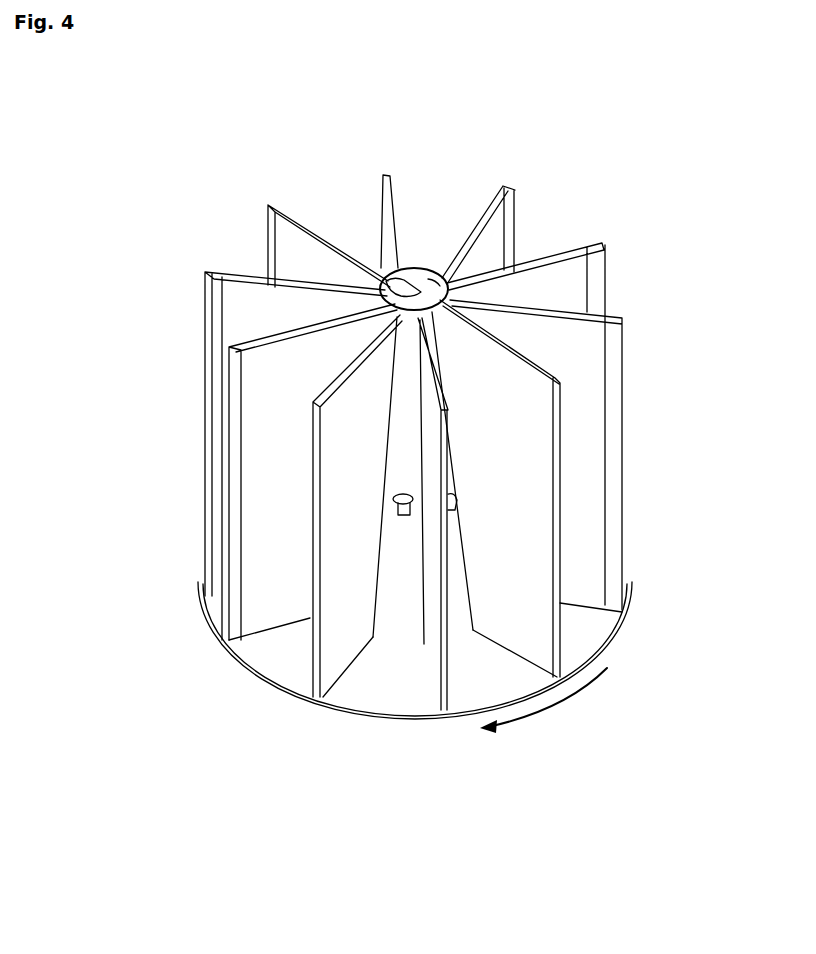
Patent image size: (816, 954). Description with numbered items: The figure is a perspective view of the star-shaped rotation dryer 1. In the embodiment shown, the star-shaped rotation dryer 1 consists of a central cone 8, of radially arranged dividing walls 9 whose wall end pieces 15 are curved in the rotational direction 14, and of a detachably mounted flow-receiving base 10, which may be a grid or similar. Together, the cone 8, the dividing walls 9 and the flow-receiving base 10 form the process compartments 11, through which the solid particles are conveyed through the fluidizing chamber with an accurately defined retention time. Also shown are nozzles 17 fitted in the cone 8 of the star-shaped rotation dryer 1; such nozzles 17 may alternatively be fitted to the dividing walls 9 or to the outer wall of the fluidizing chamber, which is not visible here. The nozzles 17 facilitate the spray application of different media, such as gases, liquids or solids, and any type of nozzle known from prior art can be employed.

The star-shaped rotation dryer 1 is at (90, 95).
The cone 8 is at (416, 272).
The dividing walls 9 is at (287, 243).
The flow-receiving base 10 is at (583, 630).
The process compartments 11 is at (287, 633).
The rotational direction 14 is at (543, 708).
The wall end pieces 15 is at (602, 243).
The nozzles 17 is at (453, 503).